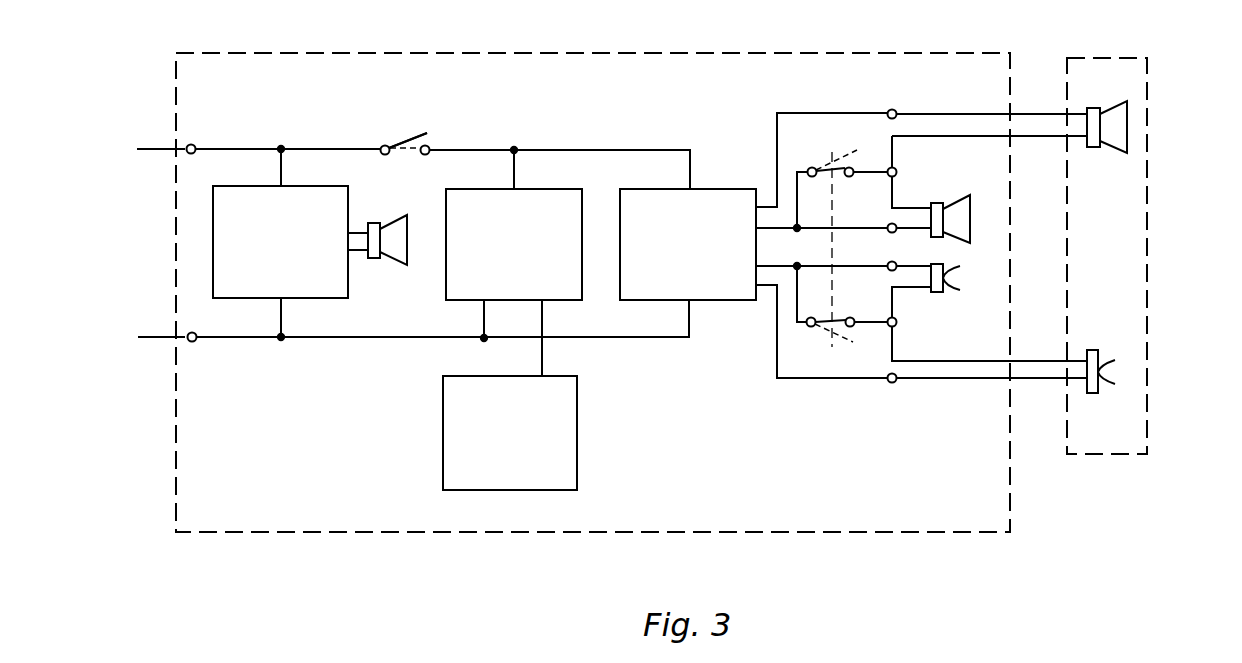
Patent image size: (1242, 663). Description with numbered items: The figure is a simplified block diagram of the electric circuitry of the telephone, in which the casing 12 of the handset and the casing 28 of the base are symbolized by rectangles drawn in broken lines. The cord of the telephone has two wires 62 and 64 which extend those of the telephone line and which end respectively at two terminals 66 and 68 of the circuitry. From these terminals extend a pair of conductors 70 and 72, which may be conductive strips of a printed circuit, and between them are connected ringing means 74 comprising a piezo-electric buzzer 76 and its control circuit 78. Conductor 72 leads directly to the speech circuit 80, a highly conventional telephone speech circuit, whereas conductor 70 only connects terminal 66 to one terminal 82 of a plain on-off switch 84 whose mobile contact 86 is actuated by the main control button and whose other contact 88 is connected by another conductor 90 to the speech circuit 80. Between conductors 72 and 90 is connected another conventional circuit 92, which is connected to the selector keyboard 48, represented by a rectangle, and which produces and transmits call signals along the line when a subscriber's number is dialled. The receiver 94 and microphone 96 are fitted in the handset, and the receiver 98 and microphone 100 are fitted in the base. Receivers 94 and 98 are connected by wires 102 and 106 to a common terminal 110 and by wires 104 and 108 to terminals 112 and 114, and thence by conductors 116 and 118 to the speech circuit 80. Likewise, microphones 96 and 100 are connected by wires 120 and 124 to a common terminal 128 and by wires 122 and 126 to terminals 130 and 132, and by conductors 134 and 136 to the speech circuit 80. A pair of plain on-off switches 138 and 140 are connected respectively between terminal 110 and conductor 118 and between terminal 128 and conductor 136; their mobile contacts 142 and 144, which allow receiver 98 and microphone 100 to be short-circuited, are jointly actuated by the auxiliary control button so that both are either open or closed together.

The casing of handset 12 is at (1147, 410).
The casing of base 28 is at (1010, 487).
The selector keyboard 48 is at (577, 440).
The wire 62 is at (152, 146).
The wire 64 is at (150, 342).
The terminal 66 is at (193, 144).
The terminal 68 is at (194, 343).
The conductor 70 is at (320, 147).
The conductor 72 is at (345, 340).
The ringing means 74 is at (358, 299).
The piezo-electric buzzer 76 is at (396, 262).
The control circuit 78 is at (252, 297).
The speech circuit 80 is at (736, 300).
The terminal of switch 82 is at (383, 145).
The on-off switch 84 is at (404, 163).
The mobile contact 86 is at (410, 133).
The contact of switch 88 is at (431, 148).
The conductor 90 is at (598, 148).
The dial circuit 92 is at (572, 298).
The receiver 94 is at (1120, 126).
The microphone 96 is at (1115, 372).
The receiver 98 is at (975, 224).
The microphone 100 is at (962, 280).
The wire 102 is at (1036, 138).
The wire 104 is at (1040, 113).
The wire 106 is at (898, 206).
The wire 108 is at (946, 206).
The common terminal 110 is at (898, 174).
The terminal 112 is at (893, 109).
The terminal 114 is at (886, 231).
The conductor 116 is at (805, 110).
The conductor 118 is at (814, 230).
The wire 120 is at (1035, 360).
The wire 122 is at (1036, 382).
The wire 124 is at (898, 289).
The wire 126 is at (946, 264).
The common terminal 128 is at (898, 322).
The terminal 130 is at (892, 384).
The terminal 132 is at (891, 261).
The conductor 134 is at (798, 382).
The conductor 136 is at (860, 268).
The on-off switch 138 is at (840, 184).
The on-off switch 140 is at (823, 334).
The mobile contact 142 is at (846, 150).
The mobile contact 144 is at (852, 328).